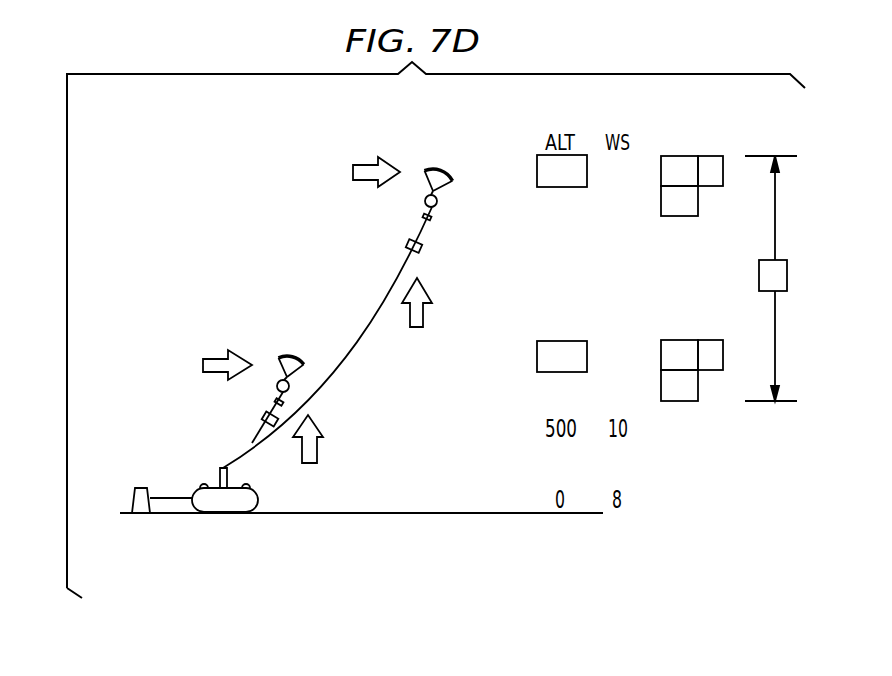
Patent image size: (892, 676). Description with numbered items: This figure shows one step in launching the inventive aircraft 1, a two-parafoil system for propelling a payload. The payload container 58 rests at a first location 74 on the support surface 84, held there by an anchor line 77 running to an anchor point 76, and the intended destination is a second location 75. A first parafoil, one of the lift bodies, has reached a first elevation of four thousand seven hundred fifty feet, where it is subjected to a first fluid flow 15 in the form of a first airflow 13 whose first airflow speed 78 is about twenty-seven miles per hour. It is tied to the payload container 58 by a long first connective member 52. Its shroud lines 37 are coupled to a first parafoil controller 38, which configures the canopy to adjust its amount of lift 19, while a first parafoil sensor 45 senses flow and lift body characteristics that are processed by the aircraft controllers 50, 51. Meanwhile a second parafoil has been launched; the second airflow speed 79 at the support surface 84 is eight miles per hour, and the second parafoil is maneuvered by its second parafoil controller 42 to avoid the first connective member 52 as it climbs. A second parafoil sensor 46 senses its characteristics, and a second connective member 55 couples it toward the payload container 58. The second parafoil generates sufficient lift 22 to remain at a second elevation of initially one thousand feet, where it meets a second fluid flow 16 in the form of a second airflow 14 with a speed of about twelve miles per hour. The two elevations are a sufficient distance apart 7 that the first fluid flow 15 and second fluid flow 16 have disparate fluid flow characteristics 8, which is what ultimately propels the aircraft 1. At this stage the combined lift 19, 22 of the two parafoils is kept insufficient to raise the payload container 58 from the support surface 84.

The aircraft 1 is at (148, 138).
The distance apart 7 is at (771, 278).
The fluid flow characteristics 8 is at (710, 263).
The first airflow 13 is at (679, 201).
The second airflow 14 is at (679, 386).
The first fluid flow 15 is at (679, 171).
The second fluid flow 16 is at (679, 355).
The amount of lift 19 is at (424, 312).
The amount of lift 22 is at (317, 450).
The shroud lines 37 is at (446, 191).
The first parafoil controller 38 is at (425, 201).
The second parafoil controller 42 is at (277, 387).
The first parafoil sensor 45 is at (422, 217).
The second parafoil sensor 46 is at (275, 402).
The aircraft controller 50 is at (408, 246).
The aircraft controller 51 is at (265, 418).
The first connective member 52 is at (373, 322).
The second connective member 55 is at (250, 443).
The payload container 58 is at (233, 500).
The first location 74 is at (207, 515).
The second location 75 is at (584, 515).
The anchor point 76 is at (140, 515).
The anchor line 77 is at (168, 515).
The first airflow speed 78 is at (353, 173).
The second airflow speed 79 is at (203, 364).
The support surface 84 is at (478, 512).